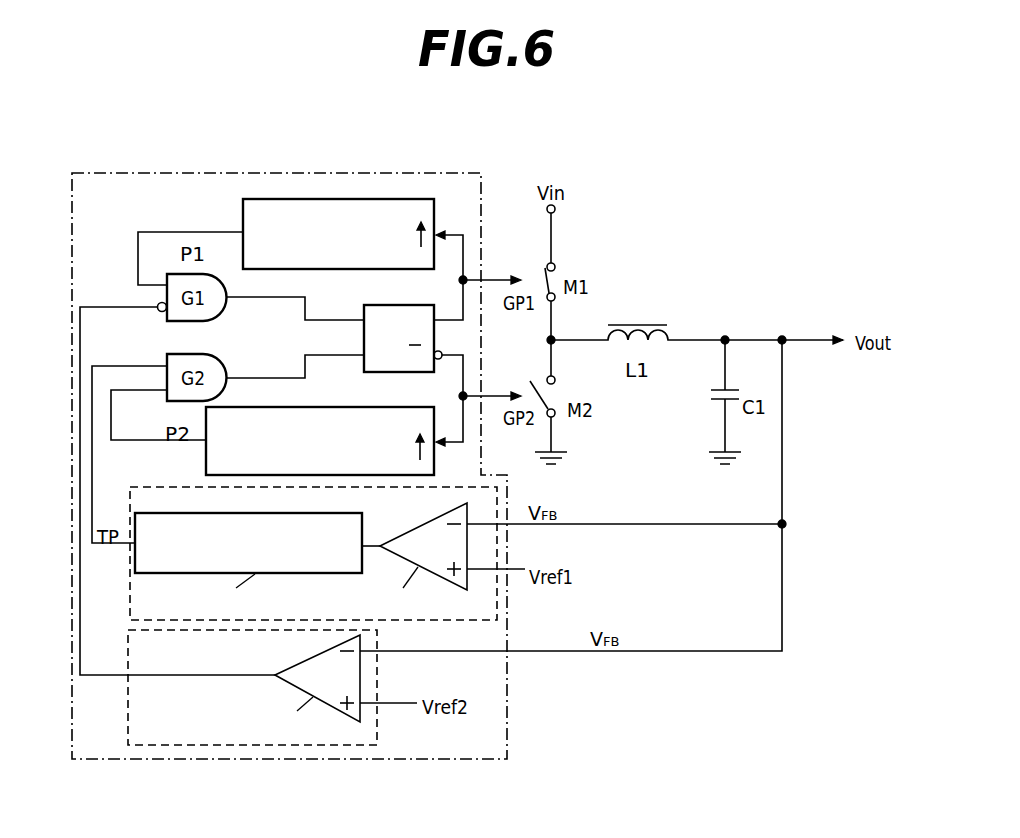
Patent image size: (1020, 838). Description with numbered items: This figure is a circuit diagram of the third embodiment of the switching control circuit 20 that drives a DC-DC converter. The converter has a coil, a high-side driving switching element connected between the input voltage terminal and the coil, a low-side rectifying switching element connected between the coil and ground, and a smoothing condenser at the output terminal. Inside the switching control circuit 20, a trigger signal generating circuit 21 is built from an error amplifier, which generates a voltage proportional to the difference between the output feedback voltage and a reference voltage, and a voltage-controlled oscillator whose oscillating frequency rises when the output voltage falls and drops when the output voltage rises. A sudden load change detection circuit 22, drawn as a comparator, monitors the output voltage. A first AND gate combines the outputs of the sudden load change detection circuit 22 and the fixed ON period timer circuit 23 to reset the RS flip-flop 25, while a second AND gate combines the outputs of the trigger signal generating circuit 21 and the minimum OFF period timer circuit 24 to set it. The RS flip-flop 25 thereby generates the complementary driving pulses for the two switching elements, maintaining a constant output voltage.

The switching control circuit 20 is at (512, 708).
The trigger signal generating circuit 21 is at (130, 557).
The sudden load change detection circuit 22 is at (128, 700).
The timer circuit 23 is at (243, 213).
The timer circuit 24 is at (206, 455).
The RS flip-flop 25 is at (364, 359).